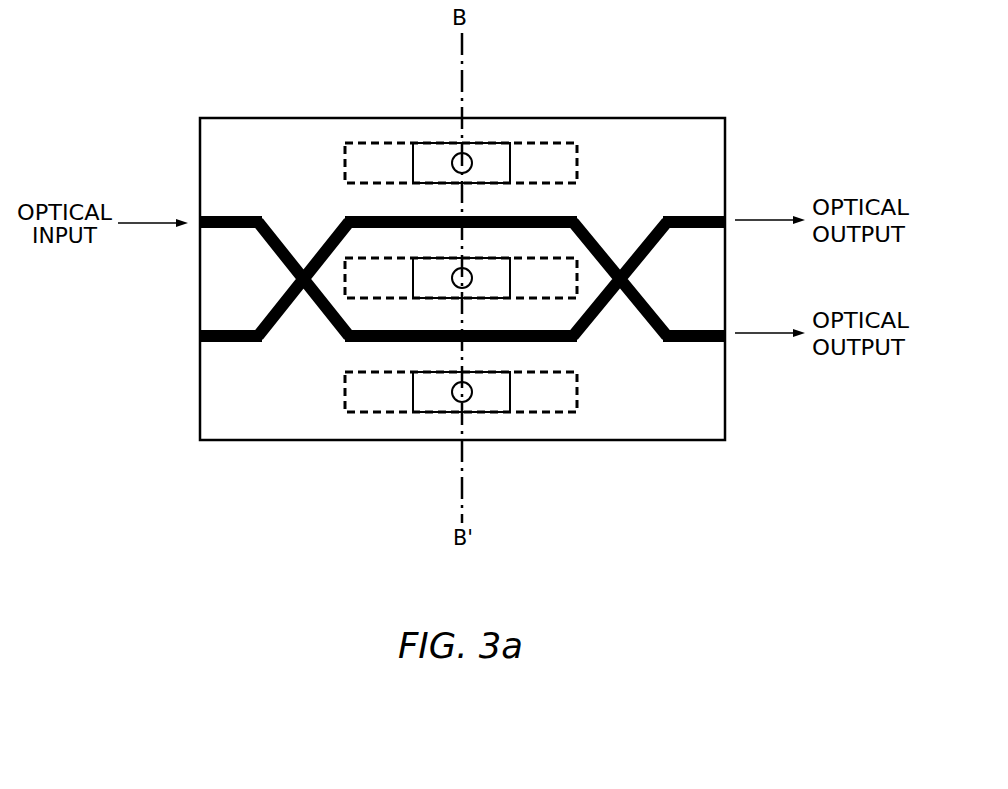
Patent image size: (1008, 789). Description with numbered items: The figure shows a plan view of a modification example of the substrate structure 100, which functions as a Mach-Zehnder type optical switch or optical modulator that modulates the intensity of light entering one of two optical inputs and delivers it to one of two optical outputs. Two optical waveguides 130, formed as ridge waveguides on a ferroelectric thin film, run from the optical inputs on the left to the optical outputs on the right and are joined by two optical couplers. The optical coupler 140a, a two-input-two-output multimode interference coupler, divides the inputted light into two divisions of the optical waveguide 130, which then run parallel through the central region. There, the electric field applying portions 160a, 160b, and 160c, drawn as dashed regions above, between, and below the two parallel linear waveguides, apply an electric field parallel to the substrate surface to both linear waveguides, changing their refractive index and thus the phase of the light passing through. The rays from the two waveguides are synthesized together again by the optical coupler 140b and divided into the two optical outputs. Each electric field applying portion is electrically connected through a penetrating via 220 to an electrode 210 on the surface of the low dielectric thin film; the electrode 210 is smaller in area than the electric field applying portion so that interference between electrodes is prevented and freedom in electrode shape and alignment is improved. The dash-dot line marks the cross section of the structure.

The substrate structure 100 is at (660, 118).
The optical waveguide 130 is at (230, 362).
The optical coupler 140a is at (305, 314).
The optical coupler 140b is at (620, 312).
The electric field applying portion 160a is at (363, 143).
The electric field applying portion 160b is at (363, 258).
The electric field applying portion 160c is at (372, 417).
The electrode 210 is at (488, 143).
The penetrating via 220 is at (453, 153).